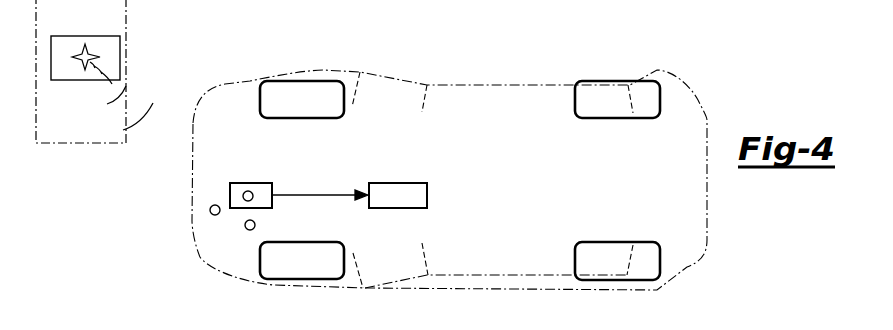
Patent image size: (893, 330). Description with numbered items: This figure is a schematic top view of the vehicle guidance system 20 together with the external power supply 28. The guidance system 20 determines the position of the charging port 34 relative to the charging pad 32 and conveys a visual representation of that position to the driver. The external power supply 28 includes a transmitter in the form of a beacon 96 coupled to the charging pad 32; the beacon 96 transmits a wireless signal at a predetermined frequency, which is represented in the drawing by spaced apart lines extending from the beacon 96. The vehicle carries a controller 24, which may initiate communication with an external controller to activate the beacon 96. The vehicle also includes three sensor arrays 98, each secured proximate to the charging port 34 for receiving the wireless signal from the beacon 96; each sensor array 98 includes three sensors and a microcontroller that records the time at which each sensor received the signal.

The vehicle guidance system 20 is at (415, 165).
The controller 24 is at (417, 208).
The external power supply 28 is at (126, 42).
The charging pad 32 is at (120, 62).
The charging port 34 is at (268, 188).
The beacon 96 is at (82, 62).
The sensor arrays 98 is at (223, 245).